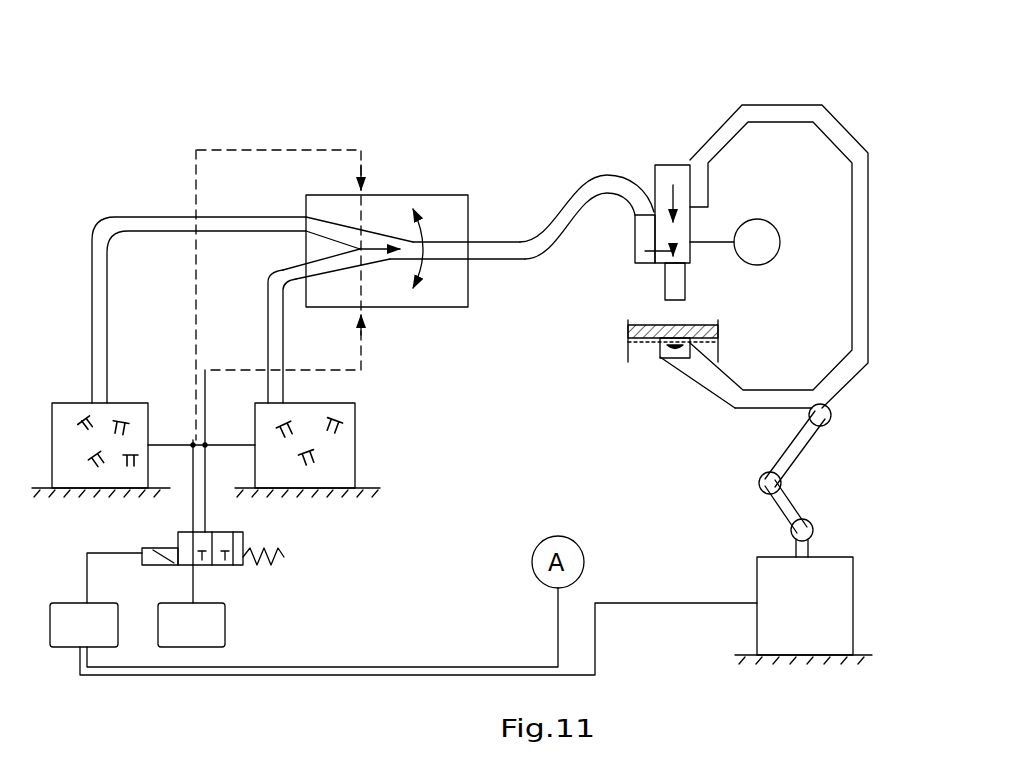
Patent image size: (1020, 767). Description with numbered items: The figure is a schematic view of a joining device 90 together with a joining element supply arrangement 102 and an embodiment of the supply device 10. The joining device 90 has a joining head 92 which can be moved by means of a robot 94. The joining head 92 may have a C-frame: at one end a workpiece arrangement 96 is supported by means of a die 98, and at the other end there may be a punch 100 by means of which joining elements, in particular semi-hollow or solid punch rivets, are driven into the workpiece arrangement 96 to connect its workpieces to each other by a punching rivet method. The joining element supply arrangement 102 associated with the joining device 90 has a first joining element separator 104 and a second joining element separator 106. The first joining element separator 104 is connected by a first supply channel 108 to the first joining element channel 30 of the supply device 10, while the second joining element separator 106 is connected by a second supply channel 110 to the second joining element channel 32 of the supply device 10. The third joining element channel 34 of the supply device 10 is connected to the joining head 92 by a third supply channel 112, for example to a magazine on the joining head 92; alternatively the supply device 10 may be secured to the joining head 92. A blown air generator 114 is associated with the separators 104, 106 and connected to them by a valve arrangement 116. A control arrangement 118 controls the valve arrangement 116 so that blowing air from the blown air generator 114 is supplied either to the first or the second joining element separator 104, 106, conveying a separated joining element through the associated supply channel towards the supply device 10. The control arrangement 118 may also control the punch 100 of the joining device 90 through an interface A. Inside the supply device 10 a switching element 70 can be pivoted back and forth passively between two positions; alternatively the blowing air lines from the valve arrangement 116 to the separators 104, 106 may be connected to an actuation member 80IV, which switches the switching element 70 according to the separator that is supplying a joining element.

The supply device 10 is at (404, 229).
The first joining element channel 30 is at (330, 240).
The second joining element channel 32 is at (332, 268).
The third joining element channel 34 is at (457, 250).
The switching element 70 is at (370, 243).
The actuation member 80IV is at (395, 301).
The joining device 90 is at (795, 208).
The joining head 92 is at (848, 118).
The robot 94 is at (847, 525).
The workpiece arrangement 96 is at (627, 331).
The die 98 is at (672, 360).
The punch 100 is at (678, 283).
The joining element supply arrangement 102 is at (583, 140).
The first joining element separator 104 is at (73, 445).
The second joining element separator 106 is at (335, 456).
The first supply channel 108 is at (128, 230).
The second supply channel 110 is at (283, 272).
The third supply channel 112 is at (518, 255).
The blown air generator 114 is at (208, 620).
The valve arrangement 116 is at (258, 568).
The control arrangement 118 is at (77, 618).